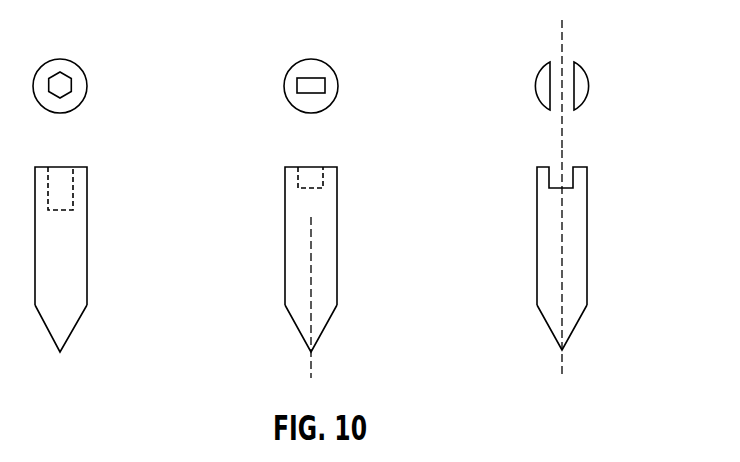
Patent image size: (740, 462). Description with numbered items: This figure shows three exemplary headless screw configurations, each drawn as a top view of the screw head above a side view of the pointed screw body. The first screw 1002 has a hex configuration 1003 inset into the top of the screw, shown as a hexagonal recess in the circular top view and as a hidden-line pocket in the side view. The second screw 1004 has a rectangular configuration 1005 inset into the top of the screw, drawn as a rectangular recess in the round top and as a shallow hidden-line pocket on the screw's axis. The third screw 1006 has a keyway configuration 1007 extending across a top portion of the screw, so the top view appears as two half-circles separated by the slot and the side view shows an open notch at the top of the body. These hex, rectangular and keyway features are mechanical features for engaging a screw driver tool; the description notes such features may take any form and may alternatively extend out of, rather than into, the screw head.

The first screw 1002 is at (87, 237).
The hex configuration 1003 is at (72, 73).
The second screw 1004 is at (337, 237).
The rectangular configuration 1005 is at (310, 87).
The third screw 1006 is at (588, 237).
The keyway configuration 1007 is at (558, 63).